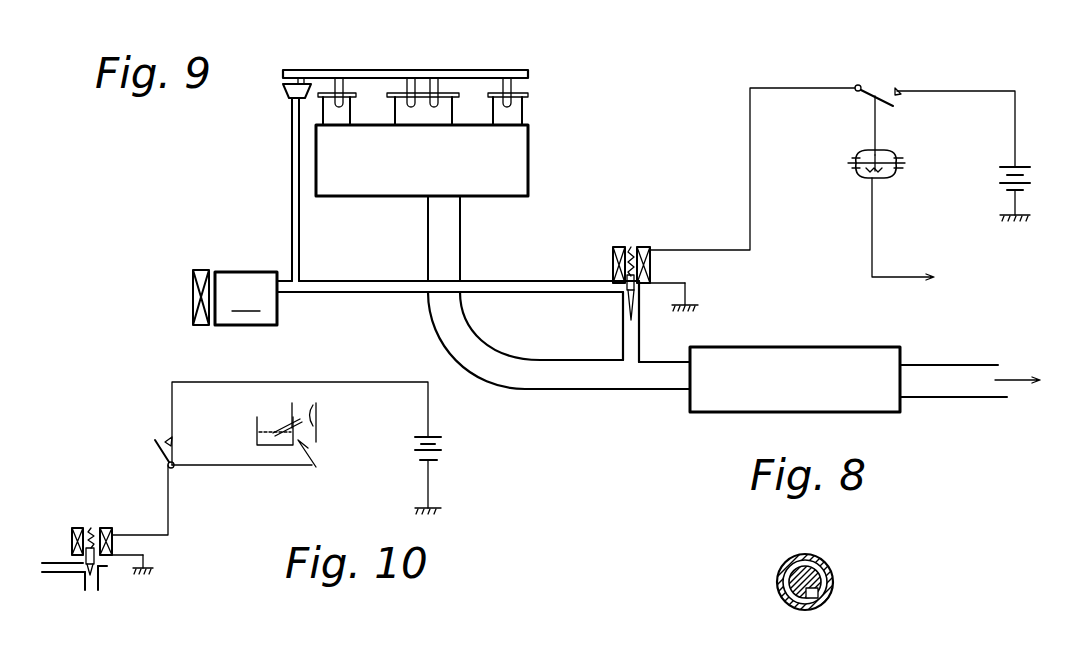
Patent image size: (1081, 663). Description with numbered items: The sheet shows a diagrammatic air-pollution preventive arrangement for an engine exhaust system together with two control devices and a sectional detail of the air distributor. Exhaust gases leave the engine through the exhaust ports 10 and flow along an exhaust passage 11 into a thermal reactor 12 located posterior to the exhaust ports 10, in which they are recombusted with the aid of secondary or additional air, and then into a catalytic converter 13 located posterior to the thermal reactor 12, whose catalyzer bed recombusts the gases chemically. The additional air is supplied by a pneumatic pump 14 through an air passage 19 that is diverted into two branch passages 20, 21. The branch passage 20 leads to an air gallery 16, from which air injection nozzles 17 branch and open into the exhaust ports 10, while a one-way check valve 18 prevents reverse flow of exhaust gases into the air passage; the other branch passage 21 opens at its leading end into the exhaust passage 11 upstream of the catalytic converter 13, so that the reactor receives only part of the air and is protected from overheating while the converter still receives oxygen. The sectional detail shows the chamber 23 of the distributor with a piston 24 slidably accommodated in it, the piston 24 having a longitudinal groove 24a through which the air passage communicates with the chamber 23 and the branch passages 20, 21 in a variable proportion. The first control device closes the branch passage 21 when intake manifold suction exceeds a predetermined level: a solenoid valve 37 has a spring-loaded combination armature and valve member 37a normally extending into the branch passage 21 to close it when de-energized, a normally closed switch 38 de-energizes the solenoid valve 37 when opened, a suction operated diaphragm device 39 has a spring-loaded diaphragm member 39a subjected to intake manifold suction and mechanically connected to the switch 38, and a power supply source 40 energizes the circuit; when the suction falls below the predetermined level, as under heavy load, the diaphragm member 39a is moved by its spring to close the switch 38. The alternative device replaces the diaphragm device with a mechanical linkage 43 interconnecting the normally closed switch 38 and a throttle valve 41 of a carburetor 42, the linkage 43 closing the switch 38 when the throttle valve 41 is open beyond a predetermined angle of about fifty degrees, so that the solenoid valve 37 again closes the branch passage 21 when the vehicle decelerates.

In FIG. 9, the exhaust ports 10 is at (347, 112).
In FIG. 9, the exhaust passage 11 is at (540, 392).
In FIG. 9, the thermal reactor 12 is at (379, 198).
In FIG. 9, the catalytic converter 13 is at (790, 347).
In FIG. 9, the pneumatic pump 14 is at (235, 297).
In FIG. 9, the air gallery 16 is at (455, 72).
In FIG. 9, the air injection nozzles 17 is at (512, 88).
In FIG. 9, the one-way check valve 18 is at (283, 90).
In FIG. 9, the air passage 19 is at (289, 292).
In FIG. 9, the branch passage 20 is at (292, 184).
In FIG. 9, the branch passage 21 is at (375, 293).
In FIG. 10, the branch passage 21 is at (58, 576).
In FIG. 8, the chamber 23 is at (784, 550).
In FIG. 8, the piston 24 is at (820, 572).
In FIG. 8, the groove 24a is at (806, 598).
In FIG. 9, the solenoid valve 37 is at (621, 240).
In FIG. 10, the solenoid valve 37 is at (101, 520).
In FIG. 9, the combination armature and valve member 37a is at (634, 312).
In FIG. 10, the combination armature and valve member 37a is at (92, 575).
In FIG. 9, the normally closed switch 38 is at (890, 86).
In FIG. 10, the normally closed switch 38 is at (158, 452).
In FIG. 9, the suction operated diaphragm device 39 is at (905, 168).
In FIG. 9, the diaphragm member 39a is at (890, 180).
In FIG. 9, the power supply source 40 is at (1038, 182).
In FIG. 10, the power supply source 40 is at (451, 450).
In FIG. 10, the throttle valve 41 is at (305, 443).
In FIG. 10, the carburetor 42 is at (318, 412).
In FIG. 10, the mechanical linkage 43 is at (233, 467).